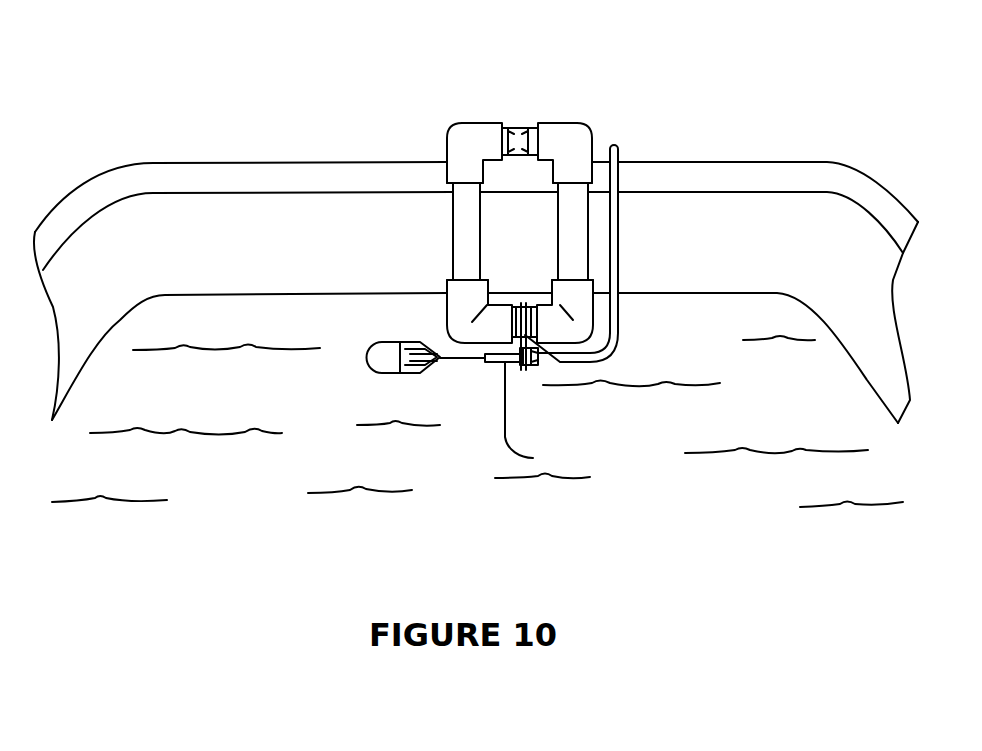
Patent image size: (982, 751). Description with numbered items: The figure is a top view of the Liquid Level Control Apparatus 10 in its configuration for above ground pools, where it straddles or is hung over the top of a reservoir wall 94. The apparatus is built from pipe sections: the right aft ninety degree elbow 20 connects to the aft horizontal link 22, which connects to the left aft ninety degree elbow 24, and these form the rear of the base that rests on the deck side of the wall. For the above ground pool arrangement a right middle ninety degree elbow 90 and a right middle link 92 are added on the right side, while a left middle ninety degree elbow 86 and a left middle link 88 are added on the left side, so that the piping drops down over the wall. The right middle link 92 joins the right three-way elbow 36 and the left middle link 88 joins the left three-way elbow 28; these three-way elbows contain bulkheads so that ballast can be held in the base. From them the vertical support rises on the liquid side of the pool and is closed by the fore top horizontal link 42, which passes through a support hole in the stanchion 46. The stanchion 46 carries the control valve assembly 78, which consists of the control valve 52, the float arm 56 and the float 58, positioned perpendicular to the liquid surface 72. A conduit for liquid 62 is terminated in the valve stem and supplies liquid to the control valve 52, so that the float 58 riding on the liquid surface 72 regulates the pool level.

The Liquid Level Control Apparatus 10 is at (435, 209).
The right aft 90 degree elbow 20 is at (493, 123).
The aft horizontal link 22 is at (517, 126).
The left aft 90 degree elbow 24 is at (538, 121).
The left 3-way elbow 28 is at (595, 312).
The right 3-way elbow 36 is at (453, 313).
The fore top horizontal link 42 is at (562, 365).
The stanchion 46 is at (527, 368).
The control valve 52 is at (542, 420).
The float arm 56 is at (458, 364).
The float 58 is at (380, 345).
The conduit for liquid 62 is at (622, 262).
The liquid surface 72 is at (733, 472).
The control valve assembly 78 is at (482, 402).
The left middle 90 degree elbow 86 is at (573, 122).
The left middle link 88 is at (590, 232).
The right middle 90 degree elbow 90 is at (458, 126).
The right middle link 92 is at (453, 225).
The reservoir wall 94 is at (815, 160).